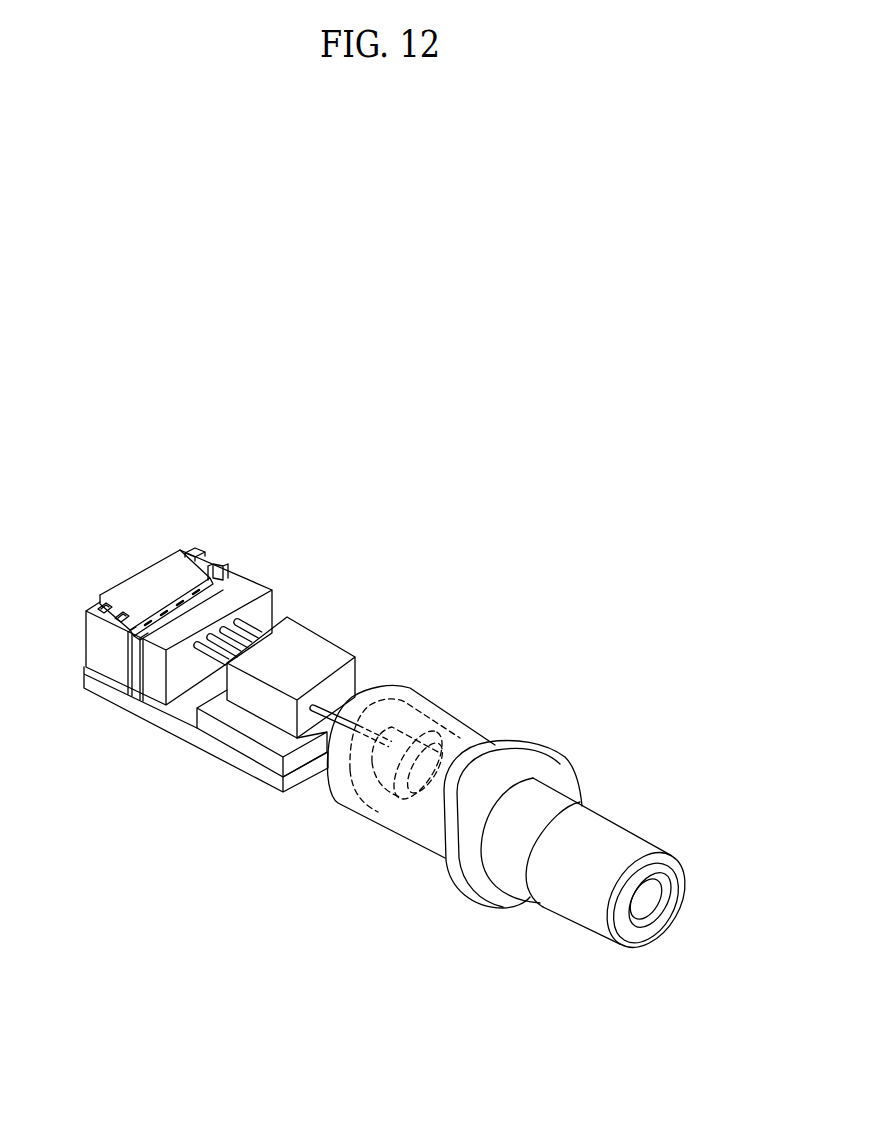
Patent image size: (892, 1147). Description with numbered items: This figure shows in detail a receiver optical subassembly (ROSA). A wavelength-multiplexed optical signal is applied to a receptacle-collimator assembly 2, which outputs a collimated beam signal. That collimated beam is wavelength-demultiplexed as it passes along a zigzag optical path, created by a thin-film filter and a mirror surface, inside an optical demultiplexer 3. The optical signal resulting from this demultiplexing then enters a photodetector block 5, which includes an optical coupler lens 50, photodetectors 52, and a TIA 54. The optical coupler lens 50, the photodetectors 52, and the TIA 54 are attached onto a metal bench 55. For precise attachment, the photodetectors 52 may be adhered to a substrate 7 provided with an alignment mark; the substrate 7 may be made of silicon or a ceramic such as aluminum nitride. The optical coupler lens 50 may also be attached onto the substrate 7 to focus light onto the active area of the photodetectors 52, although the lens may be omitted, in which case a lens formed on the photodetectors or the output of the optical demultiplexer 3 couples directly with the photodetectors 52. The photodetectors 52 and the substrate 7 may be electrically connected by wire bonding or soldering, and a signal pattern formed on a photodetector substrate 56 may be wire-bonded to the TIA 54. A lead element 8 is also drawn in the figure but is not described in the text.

The receptacle-collimator assembly 2 is at (682, 812).
The optical demultiplexer 3 is at (321, 651).
The photodetector block 5 is at (140, 710).
The substrate 7 is at (220, 733).
The lead pin 8 is at (326, 722).
The optical coupler lens 50 is at (256, 590).
The photodetectors 52 is at (217, 564).
The TIA 54 is at (150, 584).
The metal bench 55 is at (92, 642).
The photodetector substrate 56 is at (237, 578).